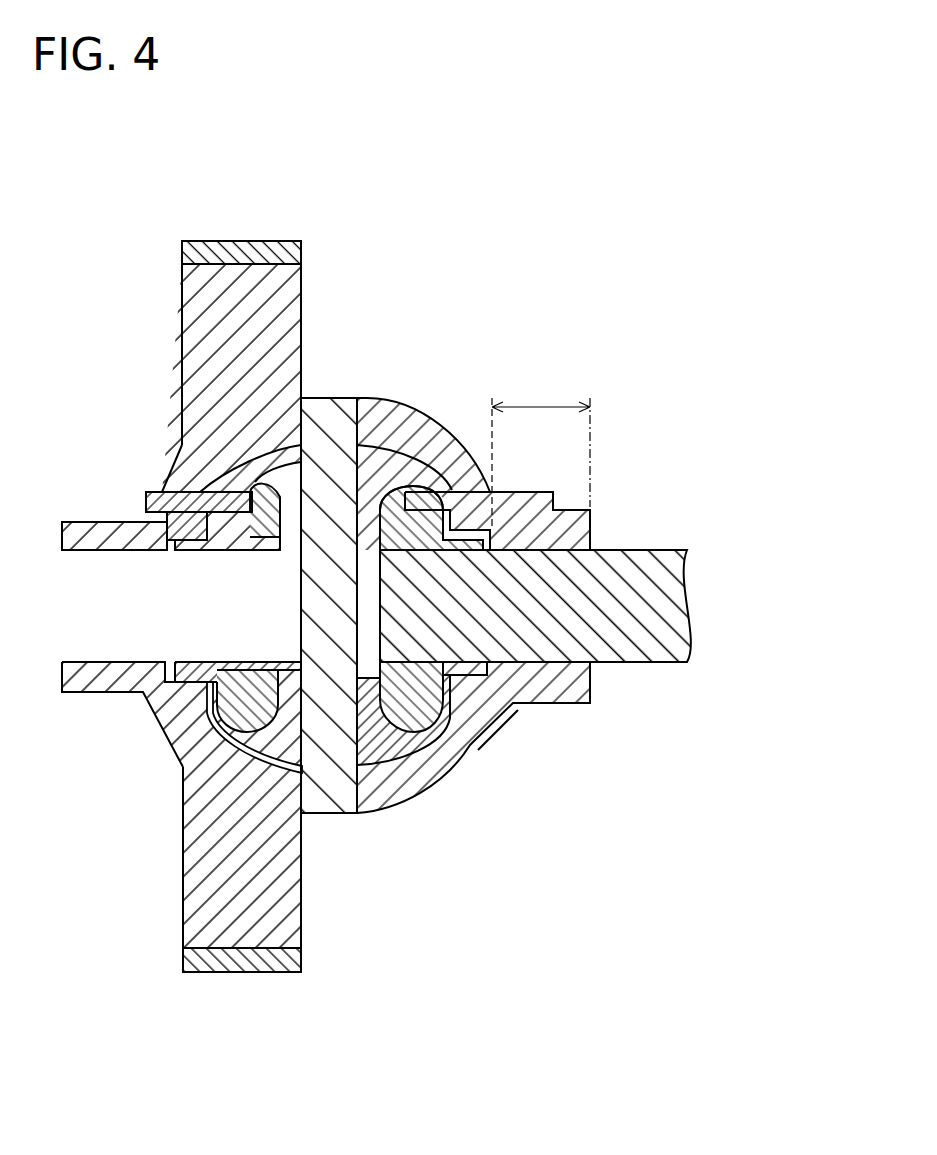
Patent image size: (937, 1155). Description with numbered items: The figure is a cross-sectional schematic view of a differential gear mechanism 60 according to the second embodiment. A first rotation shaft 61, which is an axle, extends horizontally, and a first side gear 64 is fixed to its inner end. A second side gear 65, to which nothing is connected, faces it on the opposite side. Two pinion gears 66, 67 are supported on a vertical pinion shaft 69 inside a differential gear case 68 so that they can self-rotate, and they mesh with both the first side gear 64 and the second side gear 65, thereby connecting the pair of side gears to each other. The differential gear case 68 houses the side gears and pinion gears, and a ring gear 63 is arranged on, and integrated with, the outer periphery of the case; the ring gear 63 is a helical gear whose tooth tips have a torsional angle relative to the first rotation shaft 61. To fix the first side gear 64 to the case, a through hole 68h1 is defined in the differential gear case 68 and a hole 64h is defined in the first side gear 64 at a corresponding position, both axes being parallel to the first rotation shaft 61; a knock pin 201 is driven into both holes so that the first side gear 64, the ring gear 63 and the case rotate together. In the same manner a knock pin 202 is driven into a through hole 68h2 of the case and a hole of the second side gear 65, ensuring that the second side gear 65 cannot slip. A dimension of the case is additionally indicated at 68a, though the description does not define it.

The differential gear mechanism 60 is at (723, 358).
The first rotation shaft 61 is at (667, 618).
The ring gear 63 is at (270, 252).
The first side gear 64 is at (400, 527).
The hole 64h is at (442, 486).
The second side gear 65 is at (150, 522).
The pinion gear 66 is at (382, 725).
The pinion gear 67 is at (368, 478).
The differential gear case 68 is at (367, 470).
The flange width 68a is at (538, 406).
The through hole 68h1 is at (487, 490).
The through hole 68h2 is at (147, 492).
The pinion shaft 69 is at (330, 778).
The knock pin 201 is at (540, 505).
The knock pin 202 is at (146, 497).